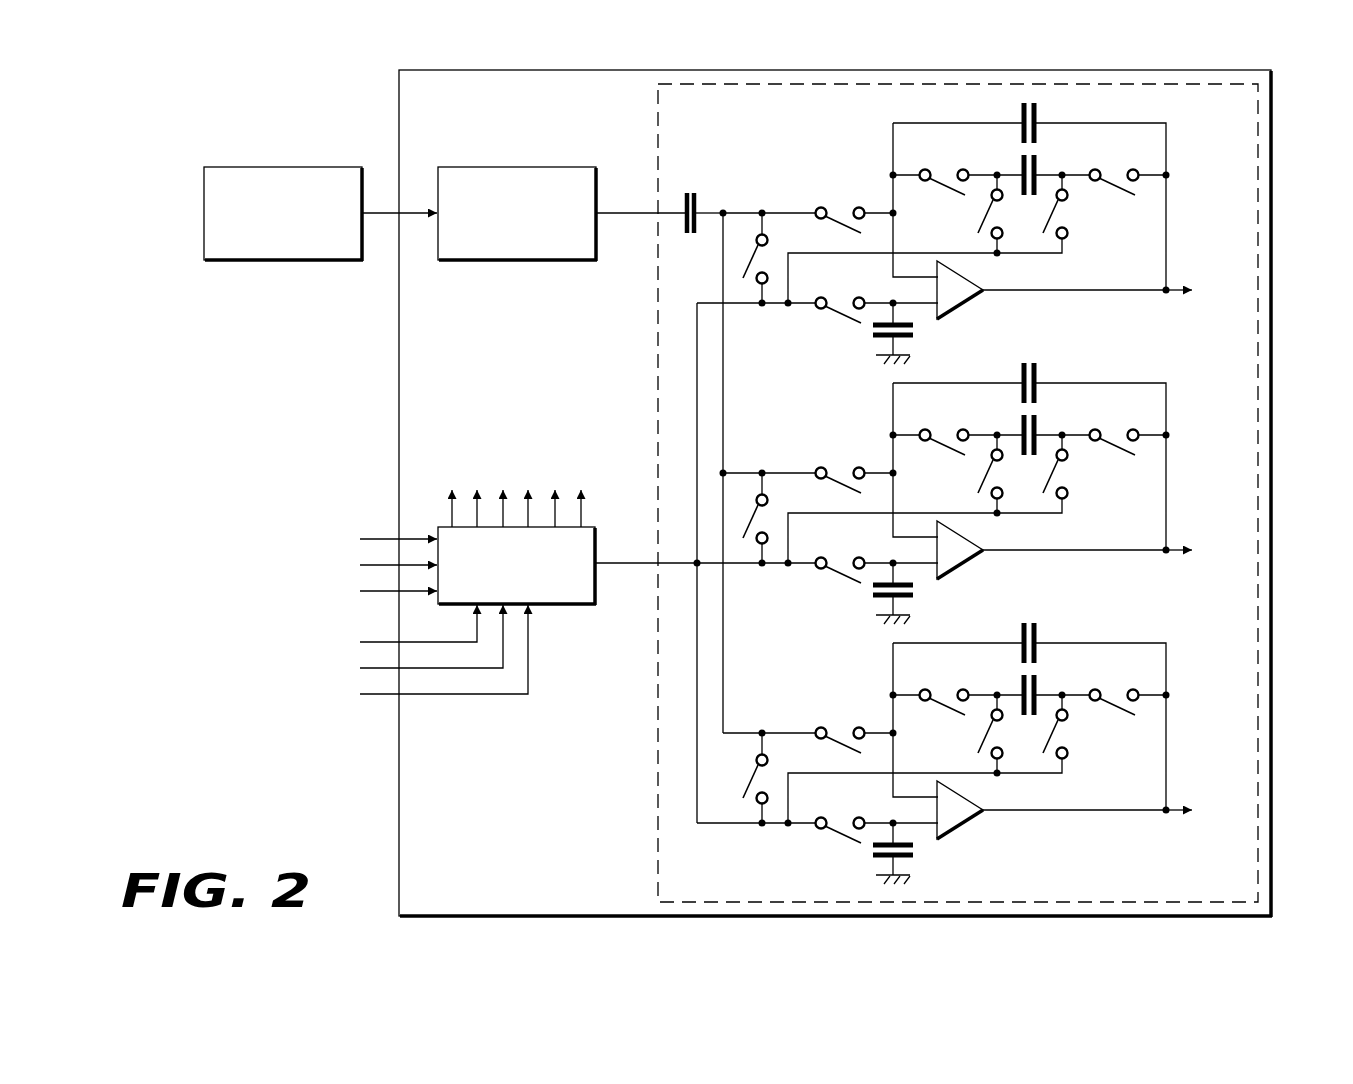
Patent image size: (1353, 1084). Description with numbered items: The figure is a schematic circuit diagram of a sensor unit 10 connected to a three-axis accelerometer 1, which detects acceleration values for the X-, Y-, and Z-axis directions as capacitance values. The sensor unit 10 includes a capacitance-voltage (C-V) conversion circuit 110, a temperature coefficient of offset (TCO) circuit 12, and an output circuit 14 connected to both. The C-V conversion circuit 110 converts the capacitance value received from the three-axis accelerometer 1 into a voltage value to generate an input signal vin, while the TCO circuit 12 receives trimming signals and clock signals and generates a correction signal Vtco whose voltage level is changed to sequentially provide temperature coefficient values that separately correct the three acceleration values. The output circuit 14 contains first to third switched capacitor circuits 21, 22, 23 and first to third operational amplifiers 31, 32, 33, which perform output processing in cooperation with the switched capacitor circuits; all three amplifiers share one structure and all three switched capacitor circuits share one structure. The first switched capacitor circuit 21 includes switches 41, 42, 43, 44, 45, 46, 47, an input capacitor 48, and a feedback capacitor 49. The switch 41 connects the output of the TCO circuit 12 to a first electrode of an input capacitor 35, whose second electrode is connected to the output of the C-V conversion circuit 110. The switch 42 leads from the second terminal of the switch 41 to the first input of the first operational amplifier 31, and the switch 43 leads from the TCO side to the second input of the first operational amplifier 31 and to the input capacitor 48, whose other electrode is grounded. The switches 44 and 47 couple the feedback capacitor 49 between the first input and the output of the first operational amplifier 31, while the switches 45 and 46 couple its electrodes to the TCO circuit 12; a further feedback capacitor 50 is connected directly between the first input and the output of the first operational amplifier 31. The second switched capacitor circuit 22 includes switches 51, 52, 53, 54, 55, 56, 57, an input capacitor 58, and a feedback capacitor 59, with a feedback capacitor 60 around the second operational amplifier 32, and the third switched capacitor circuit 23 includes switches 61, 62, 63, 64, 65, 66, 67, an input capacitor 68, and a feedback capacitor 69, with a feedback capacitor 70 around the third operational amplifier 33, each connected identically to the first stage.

The three-axis accelerometer 1 is at (340, 167).
The sensor unit 10 is at (398, 348).
The capacitance-voltage (C-V) conversion circuit 110 is at (560, 167).
The temperature coefficient of offset (TCO) circuit 12 is at (568, 604).
The output circuit (correction circuit) 14 is at (657, 399).
The first switched capacitor (SC) circuit 21 is at (801, 143).
The second switched capacitor (SC) circuit 22 is at (966, 488).
The third switched capacitor (SC) circuit 23 is at (968, 748).
The first operational amplifier 31 is at (972, 304).
The second operational amplifier 32 is at (974, 558).
The third operational amplifier 33 is at (974, 818).
The input capacitor 35 is at (698, 200).
The switch 41 is at (748, 254).
The switch 42 is at (836, 212).
The switch 43 is at (838, 323).
The switch 44 is at (951, 177).
The switch 45 is at (977, 218).
The switch 46 is at (1056, 212).
The switch 47 is at (1116, 177).
The input capacitor 48 is at (914, 336).
The feedback capacitor 49 is at (1040, 160).
The feedback capacitor 50 is at (1041, 113).
The switch 51 is at (748, 514).
The switch 52 is at (840, 464).
The switch 53 is at (833, 584).
The switch 54 is at (944, 426).
The switch 55 is at (970, 474).
The switch 56 is at (1072, 474).
The switch 57 is at (1114, 426).
The input capacitor 58 is at (913, 593).
The feedback capacitor 59 is at (1052, 426).
The feedback capacitor 60 is at (1052, 378).
The switch 61 is at (748, 774).
The switch 62 is at (840, 724).
The switch 63 is at (833, 844).
The switch 64 is at (944, 686).
The switch 65 is at (970, 734).
The switch 66 is at (1072, 734).
The switch 67 is at (1114, 686).
The input capacitor 68 is at (913, 853).
The feedback capacitor 69 is at (1052, 686).
The feedback capacitor 70 is at (1052, 638).